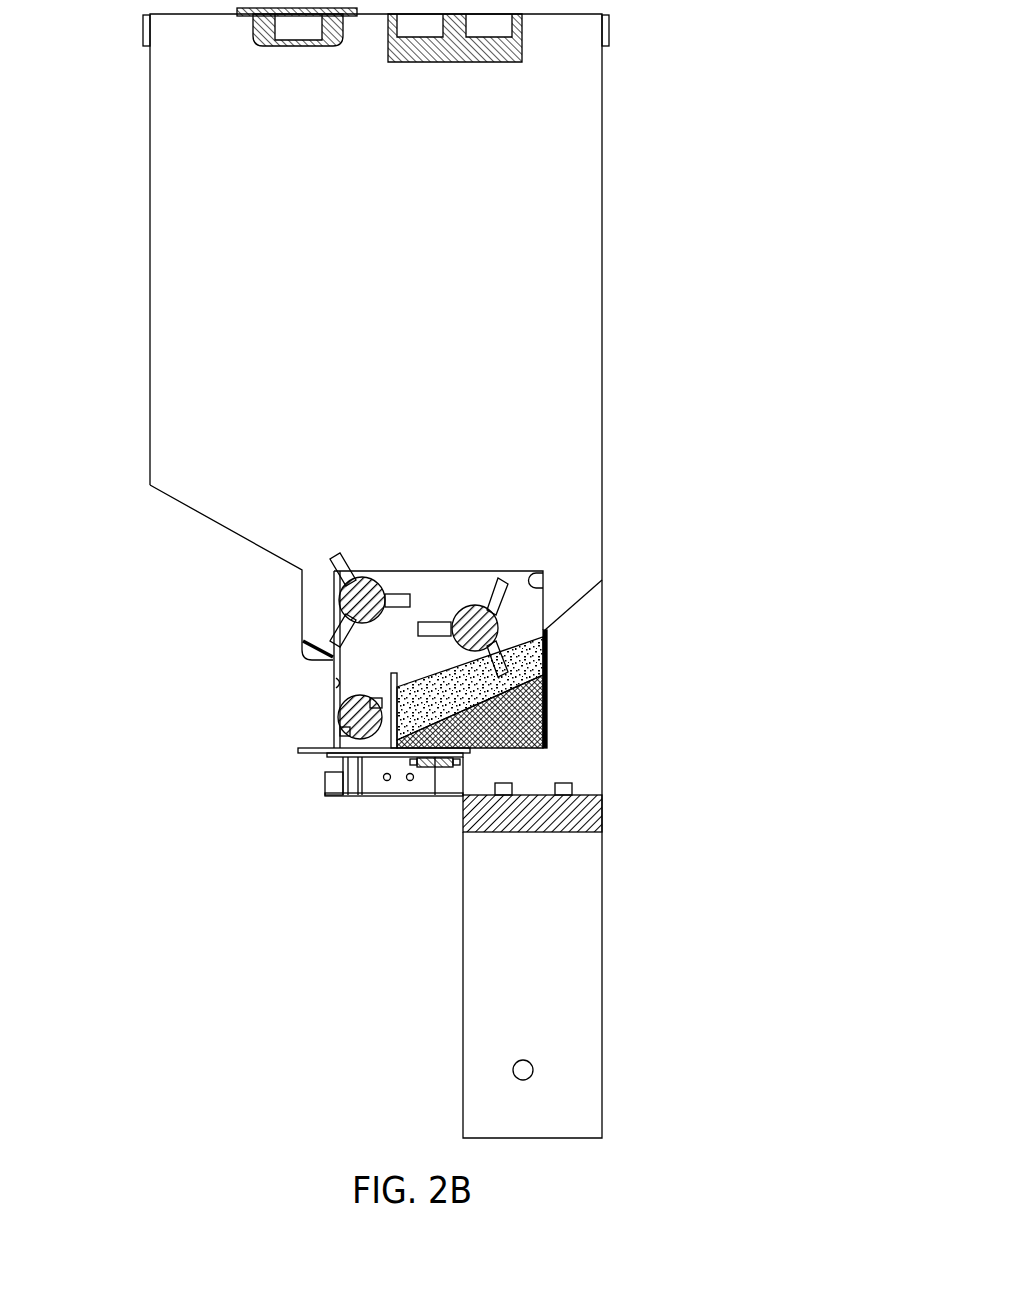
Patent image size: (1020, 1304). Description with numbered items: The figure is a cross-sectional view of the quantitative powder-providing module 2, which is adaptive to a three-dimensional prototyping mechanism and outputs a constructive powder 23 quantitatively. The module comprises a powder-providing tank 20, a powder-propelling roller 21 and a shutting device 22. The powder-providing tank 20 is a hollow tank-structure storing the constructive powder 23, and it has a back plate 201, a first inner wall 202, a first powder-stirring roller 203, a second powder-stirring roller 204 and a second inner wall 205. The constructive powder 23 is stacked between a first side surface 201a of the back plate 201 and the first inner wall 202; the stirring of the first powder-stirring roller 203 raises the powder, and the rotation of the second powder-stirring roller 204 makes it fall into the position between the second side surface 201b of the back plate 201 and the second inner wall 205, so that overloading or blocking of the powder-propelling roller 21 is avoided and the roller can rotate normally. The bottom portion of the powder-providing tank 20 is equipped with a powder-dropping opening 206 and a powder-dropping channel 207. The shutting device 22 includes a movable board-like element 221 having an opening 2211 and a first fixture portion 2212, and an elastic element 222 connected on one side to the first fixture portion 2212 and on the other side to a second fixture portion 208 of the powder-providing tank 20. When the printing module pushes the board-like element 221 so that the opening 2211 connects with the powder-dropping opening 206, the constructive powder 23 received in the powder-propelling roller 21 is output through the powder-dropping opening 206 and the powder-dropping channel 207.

The quantitative powder-providing module 2 is at (752, 57).
The powder-providing tank 20 is at (174, 258).
The back plate 201 is at (341, 695).
The first side surface 201a is at (400, 676).
The second side surface 201b is at (306, 645).
The first inner wall 202 is at (545, 572).
The first powder-stirring roller 203 is at (495, 619).
The second powder-stirring roller 204 is at (352, 600).
The second inner wall 205 is at (334, 682).
The powder-dropping opening 206 is at (334, 743).
The powder-dropping channel 207 is at (352, 782).
The second fixture portion 208 is at (412, 764).
The powder-propelling roller 21 is at (346, 712).
The shutting device 22 is at (685, 757).
The board-like element 221 is at (465, 753).
The opening 2211 is at (336, 767).
The first fixture portion 2212 is at (547, 717).
The elastic element 222 is at (603, 803).
The constructive powder 23 is at (545, 662).